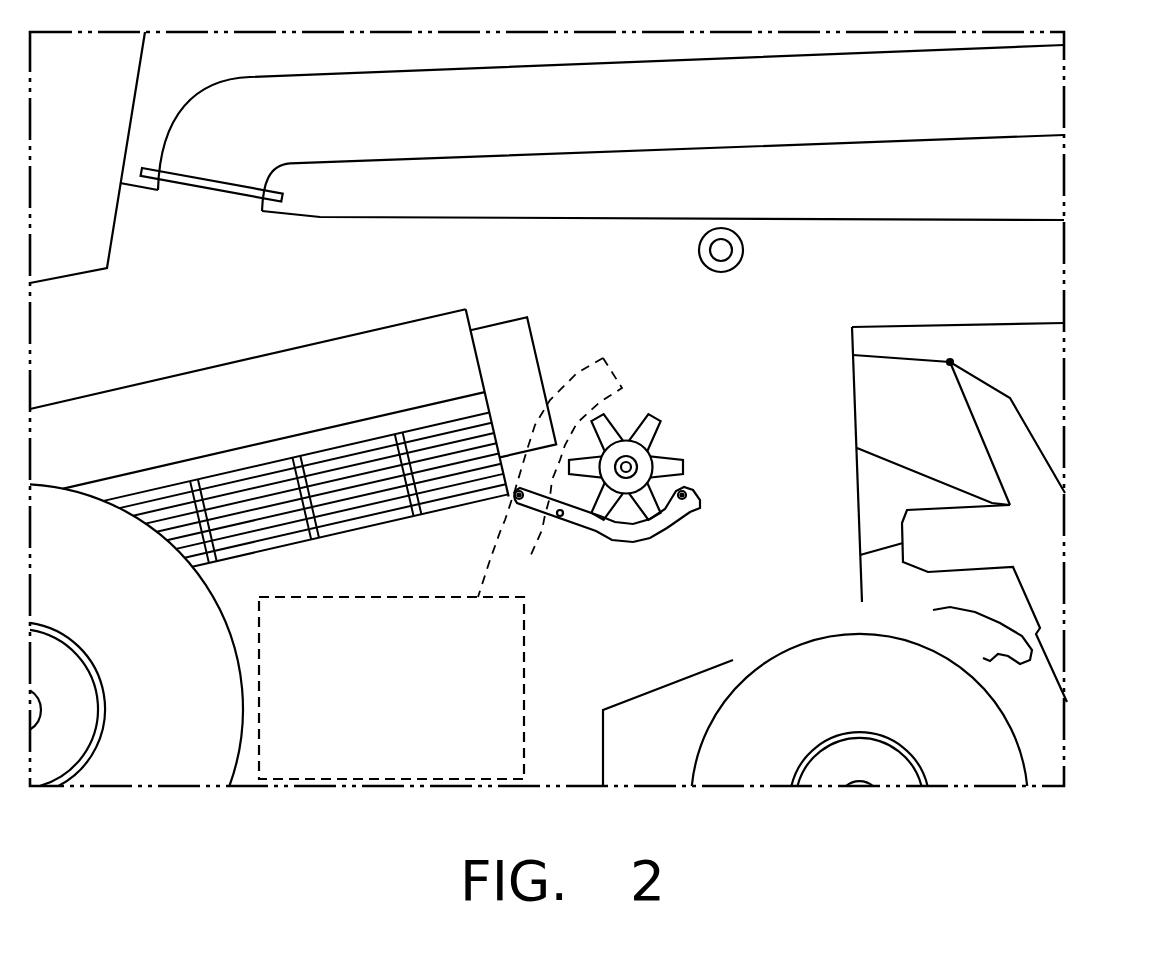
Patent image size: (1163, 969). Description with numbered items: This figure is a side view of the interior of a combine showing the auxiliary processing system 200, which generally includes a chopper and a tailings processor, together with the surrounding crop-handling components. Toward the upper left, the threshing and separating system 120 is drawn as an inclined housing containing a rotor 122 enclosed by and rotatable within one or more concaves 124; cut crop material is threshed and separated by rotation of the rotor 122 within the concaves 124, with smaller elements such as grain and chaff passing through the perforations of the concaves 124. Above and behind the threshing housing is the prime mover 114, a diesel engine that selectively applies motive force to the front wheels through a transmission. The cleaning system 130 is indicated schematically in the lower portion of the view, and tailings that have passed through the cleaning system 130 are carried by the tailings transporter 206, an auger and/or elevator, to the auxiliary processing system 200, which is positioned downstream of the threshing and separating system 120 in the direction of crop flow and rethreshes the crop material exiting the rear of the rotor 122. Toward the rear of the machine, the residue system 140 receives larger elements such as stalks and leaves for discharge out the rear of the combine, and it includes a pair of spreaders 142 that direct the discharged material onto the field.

The prime mover 114 is at (733, 226).
The threshing and separating system 120 is at (249, 367).
The rotor 122 is at (504, 333).
The concave 124 is at (250, 527).
The cleaning system 130 is at (373, 785).
The residue system 140 is at (1068, 632).
The spreader 142 is at (1012, 646).
The auxiliary processing system 200 is at (711, 462).
The tailings transporter 206 is at (541, 533).